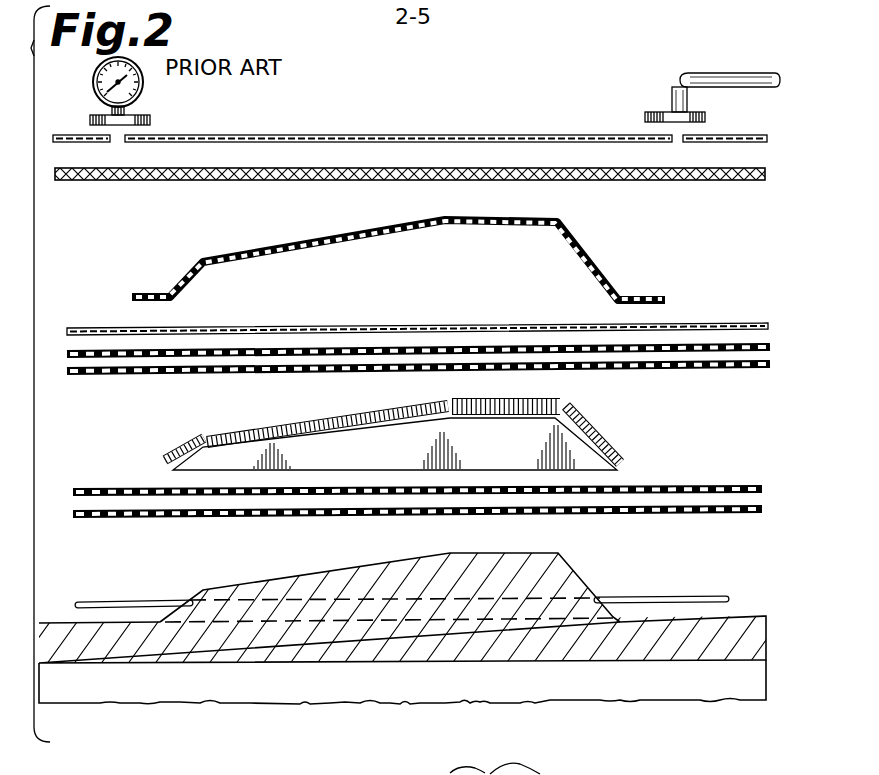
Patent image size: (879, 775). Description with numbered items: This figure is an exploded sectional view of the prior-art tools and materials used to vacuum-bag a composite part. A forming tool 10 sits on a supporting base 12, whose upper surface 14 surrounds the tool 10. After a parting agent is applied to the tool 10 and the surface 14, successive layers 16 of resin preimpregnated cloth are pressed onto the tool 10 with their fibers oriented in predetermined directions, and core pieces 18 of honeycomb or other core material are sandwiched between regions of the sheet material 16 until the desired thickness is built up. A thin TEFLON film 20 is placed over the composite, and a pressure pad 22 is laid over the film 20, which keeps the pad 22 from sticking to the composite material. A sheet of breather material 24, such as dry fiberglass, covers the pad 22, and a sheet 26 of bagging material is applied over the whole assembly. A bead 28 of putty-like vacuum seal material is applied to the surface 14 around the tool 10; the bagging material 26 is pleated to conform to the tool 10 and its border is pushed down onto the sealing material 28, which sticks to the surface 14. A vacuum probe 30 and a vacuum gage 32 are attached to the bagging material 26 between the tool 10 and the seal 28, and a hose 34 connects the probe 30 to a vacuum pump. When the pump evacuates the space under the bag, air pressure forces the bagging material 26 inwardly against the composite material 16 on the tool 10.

The forming tool 10 is at (578, 578).
The supporting base 12 is at (288, 690).
The upper surface 14 is at (663, 615).
The layer of resin preimpregnated cloth 16 is at (97, 376).
The core pieces 18 is at (177, 448).
The TEFLON film 20 is at (720, 322).
The pressure pad 22 is at (263, 252).
The breather material 24 is at (130, 181).
The bagging material 26 is at (405, 134).
The bead of vacuum seal material 28 is at (100, 602).
The vacuum probe 30 is at (670, 98).
The vacuum gage 32 is at (135, 108).
The hose 34 is at (714, 80).